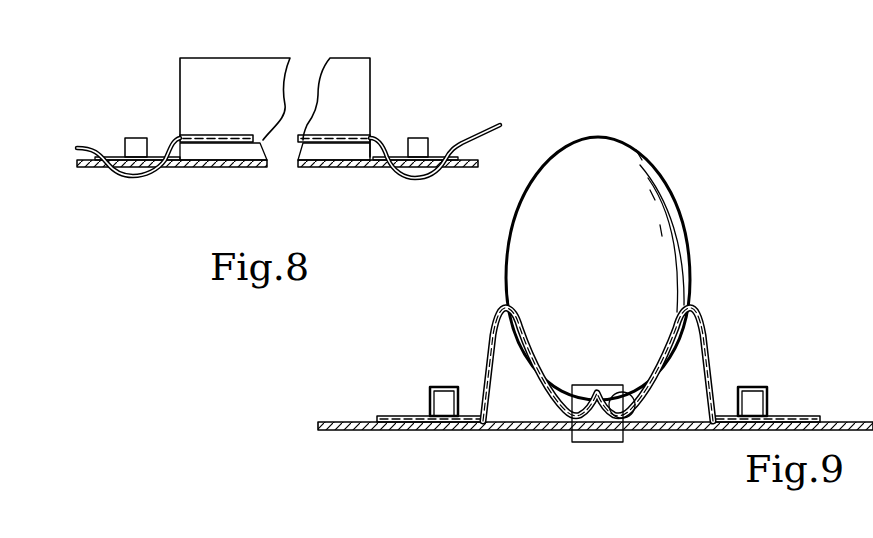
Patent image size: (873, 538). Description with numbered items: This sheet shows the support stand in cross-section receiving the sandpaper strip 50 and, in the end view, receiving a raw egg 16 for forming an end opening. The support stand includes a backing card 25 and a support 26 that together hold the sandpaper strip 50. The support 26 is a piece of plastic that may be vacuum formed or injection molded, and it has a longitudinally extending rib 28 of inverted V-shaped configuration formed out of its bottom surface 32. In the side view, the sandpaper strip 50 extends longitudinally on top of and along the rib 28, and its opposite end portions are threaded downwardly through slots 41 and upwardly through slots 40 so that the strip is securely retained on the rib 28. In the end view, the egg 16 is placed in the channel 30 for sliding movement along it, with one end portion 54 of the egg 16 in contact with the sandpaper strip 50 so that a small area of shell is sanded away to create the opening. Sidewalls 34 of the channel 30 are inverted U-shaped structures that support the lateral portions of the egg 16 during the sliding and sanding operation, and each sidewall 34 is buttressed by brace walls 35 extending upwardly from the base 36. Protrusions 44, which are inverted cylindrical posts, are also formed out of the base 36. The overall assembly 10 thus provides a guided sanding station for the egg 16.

In FIG. 9, the egg display assembly 10 is at (595, 480).
In FIG. 9, the egg 16 is at (667, 200).
In FIG. 8, the backing card 25 is at (90, 165).
In FIG. 8, the support 26 is at (240, 58).
In FIG. 9, the support 26 is at (472, 338).
In FIG. 8, the rib 28 is at (243, 145).
In FIG. 9, the rib 28 is at (637, 427).
In FIG. 9, the channel 30 is at (663, 303).
In FIG. 9, the bottom surface 32 is at (565, 422).
In FIG. 8, the sidewalls 34 is at (207, 99).
In FIG. 9, the sidewalls 34 is at (517, 333).
In FIG. 9, the brace walls 35 is at (495, 387).
In FIG. 8, the base 36 is at (435, 157).
In FIG. 9, the base 36 is at (400, 420).
In FIG. 8, the slots 40 is at (107, 185).
In FIG. 8, the slots 41 is at (167, 185).
In FIG. 8, the protrusions 44 is at (138, 137).
In FIG. 9, the protrusions 44 is at (440, 387).
In FIG. 8, the sandpaper strip 50 is at (98, 148).
In FIG. 9, the sandpaper strip 50 is at (585, 440).
In FIG. 9, the end portion 54 is at (572, 383).